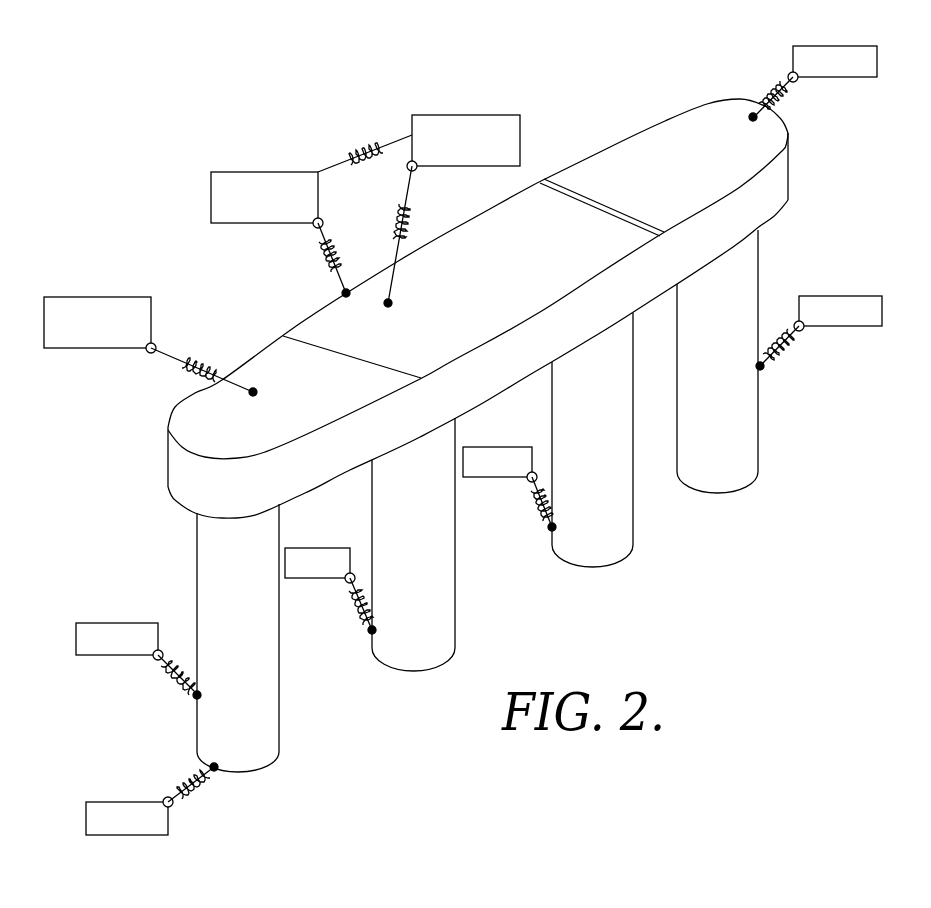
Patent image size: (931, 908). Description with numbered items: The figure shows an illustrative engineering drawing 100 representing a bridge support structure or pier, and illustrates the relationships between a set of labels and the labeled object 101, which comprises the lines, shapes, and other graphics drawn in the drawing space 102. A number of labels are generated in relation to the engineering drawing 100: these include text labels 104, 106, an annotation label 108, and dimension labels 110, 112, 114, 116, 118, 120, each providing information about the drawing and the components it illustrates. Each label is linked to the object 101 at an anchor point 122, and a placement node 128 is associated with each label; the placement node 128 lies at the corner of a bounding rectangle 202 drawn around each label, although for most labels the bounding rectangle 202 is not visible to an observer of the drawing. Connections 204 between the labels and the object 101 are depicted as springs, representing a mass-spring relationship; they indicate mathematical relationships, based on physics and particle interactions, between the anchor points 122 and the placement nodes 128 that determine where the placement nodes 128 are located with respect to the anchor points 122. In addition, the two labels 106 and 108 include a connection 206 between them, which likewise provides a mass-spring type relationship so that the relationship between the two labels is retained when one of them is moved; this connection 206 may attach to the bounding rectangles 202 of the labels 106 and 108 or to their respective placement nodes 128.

The engineering drawing 100 is at (90, 186).
The object 101 is at (792, 168).
The drawing space 102 is at (766, 604).
The text label 104 is at (72, 313).
The text label 106 is at (510, 130).
The annotation label 108 is at (293, 185).
The dimension label 110 is at (827, 67).
The dimension label 112 is at (853, 318).
The dimension label 114 is at (498, 470).
The dimension label 116 is at (328, 570).
The dimension label 118 is at (100, 645).
The dimension label 120 is at (128, 828).
The anchor point 122 is at (252, 395).
The placement node 128 is at (157, 345).
The bounding rectangle 202 is at (442, 447).
The connection 204 is at (178, 360).
The connection 206 is at (342, 158).